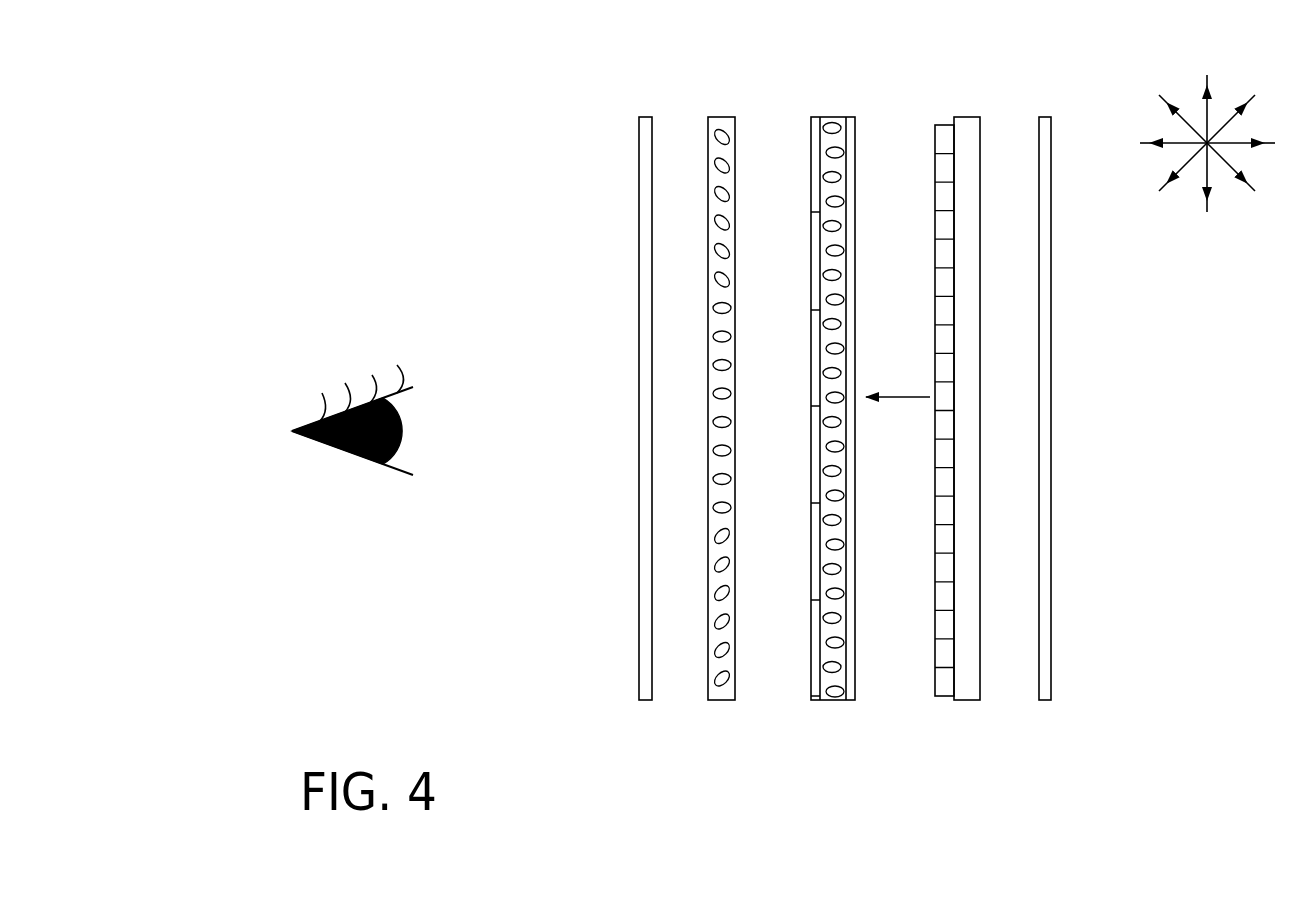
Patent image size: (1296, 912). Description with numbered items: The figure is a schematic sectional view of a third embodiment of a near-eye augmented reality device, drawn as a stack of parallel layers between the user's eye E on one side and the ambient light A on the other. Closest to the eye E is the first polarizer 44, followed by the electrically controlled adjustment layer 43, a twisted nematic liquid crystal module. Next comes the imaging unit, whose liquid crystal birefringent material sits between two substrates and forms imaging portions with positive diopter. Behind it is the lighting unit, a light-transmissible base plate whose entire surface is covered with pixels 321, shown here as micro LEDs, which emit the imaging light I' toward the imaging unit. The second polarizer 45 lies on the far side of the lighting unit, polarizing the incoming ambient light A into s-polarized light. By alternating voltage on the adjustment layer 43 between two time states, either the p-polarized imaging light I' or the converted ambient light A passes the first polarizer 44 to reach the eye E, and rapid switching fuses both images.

The pixels 321 is at (943, 593).
The adjustment layer 43 is at (723, 122).
The first polarizer 44 is at (646, 115).
The second polarizer 45 is at (1045, 613).
The ambient light A is at (1190, 143).
The eye E is at (342, 453).
The imaging light I' is at (898, 378).